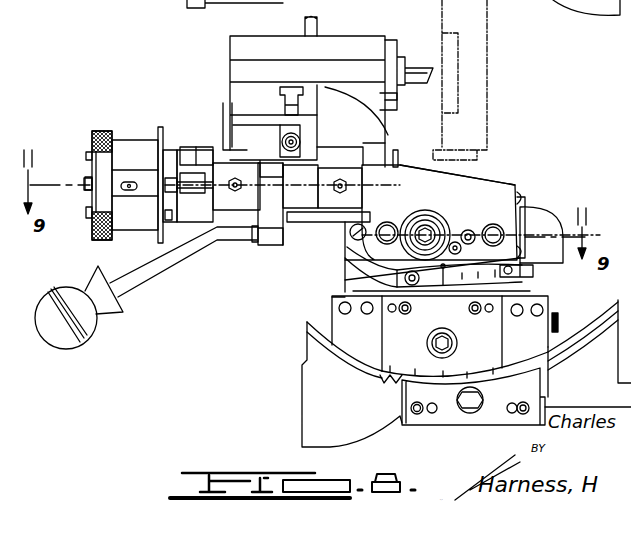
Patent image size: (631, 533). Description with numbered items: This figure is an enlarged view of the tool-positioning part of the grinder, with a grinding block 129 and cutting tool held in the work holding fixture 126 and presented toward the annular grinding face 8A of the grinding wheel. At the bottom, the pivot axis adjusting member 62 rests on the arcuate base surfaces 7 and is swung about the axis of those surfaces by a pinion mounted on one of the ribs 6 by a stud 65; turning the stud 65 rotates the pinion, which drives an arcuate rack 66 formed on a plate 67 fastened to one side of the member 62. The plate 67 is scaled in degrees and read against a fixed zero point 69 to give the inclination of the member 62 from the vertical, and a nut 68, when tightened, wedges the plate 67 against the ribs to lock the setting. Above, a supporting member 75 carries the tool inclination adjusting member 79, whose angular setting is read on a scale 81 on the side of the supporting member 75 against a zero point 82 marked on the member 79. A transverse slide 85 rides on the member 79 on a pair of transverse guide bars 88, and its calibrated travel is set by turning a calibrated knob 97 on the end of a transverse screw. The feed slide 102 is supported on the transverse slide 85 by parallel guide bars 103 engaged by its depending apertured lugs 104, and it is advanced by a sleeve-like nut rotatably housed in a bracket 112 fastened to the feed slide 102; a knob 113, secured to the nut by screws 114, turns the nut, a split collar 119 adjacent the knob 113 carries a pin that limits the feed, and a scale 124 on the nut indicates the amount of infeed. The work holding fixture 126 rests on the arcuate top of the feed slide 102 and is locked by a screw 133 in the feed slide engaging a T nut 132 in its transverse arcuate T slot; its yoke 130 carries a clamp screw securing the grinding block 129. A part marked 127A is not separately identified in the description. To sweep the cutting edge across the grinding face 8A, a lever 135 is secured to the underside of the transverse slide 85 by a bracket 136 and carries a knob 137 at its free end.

The knob 113 is at (110, 112).
The screws 114 is at (88, 158).
The collar 119 is at (123, 142).
The scale 124 is at (173, 150).
The guide bars 103 is at (193, 208).
The bracket 112 is at (213, 134).
The work holding fixture 126 is at (243, 105).
The grinding block 129 is at (283, 30).
The yoke 130 is at (320, 24).
The bolt 127A is at (298, 88).
The T nut 132 is at (305, 107).
The screw 133 is at (302, 140).
The feed slide 102 is at (270, 146).
The annular grinding face 8A is at (440, 15).
The apertured lugs 104 is at (223, 197).
The supporting member 75 is at (350, 258).
The lever 135 is at (141, 274).
The bracket 136 is at (267, 243).
The knob 137 is at (88, 325).
The transverse guide bars 88 is at (389, 226).
The calibrated knob 97 is at (430, 212).
The tool inclination adjusting member 79 is at (356, 239).
The transverse slide 85 is at (510, 183).
The scale 81 is at (537, 278).
The zero point 82 is at (347, 278).
The pivot axis adjusting member 62 is at (530, 340).
The nut 68 is at (427, 343).
The plate 67 is at (485, 339).
The arcuate base surfaces 7 is at (590, 301).
The ribs 6 is at (590, 385).
The arcuate rack 66 is at (389, 381).
The fixed zero point 69 is at (448, 380).
The stud 65 is at (478, 396).